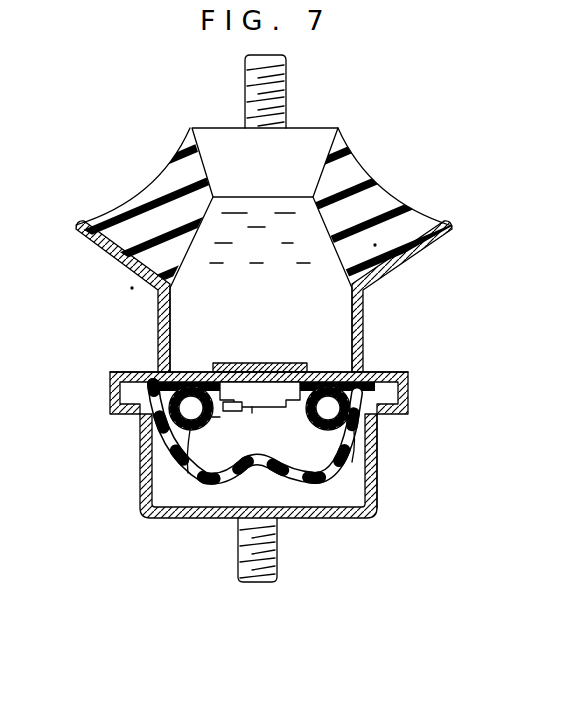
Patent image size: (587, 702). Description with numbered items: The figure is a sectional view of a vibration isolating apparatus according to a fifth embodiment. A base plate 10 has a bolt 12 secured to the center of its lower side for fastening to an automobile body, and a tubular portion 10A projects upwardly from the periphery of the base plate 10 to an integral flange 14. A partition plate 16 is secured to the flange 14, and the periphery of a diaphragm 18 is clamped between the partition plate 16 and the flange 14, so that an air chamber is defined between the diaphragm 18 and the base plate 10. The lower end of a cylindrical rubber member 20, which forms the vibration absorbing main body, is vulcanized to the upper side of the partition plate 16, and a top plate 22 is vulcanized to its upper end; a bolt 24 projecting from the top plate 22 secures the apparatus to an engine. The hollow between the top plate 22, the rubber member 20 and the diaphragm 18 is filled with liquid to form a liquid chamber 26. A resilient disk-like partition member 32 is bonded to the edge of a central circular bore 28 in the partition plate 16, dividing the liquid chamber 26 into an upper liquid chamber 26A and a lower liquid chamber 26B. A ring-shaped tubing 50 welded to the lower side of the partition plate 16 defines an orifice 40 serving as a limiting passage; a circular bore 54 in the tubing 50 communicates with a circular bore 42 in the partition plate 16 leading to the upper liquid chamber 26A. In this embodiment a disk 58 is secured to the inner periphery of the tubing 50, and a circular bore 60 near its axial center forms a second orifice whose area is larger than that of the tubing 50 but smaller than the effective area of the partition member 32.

The base plate 10 is at (317, 518).
The tubular portion 10A is at (378, 482).
The bolt 12 is at (278, 560).
The flange 14 is at (392, 416).
The partition plate 16 is at (378, 368).
The diaphragm 18 is at (347, 459).
The cylindrical rubber member 20 is at (385, 205).
The top plate 22 is at (303, 143).
The bolt 24 is at (287, 73).
The liquid chamber 26 is at (204, 318).
The upper liquid chamber 26A is at (295, 300).
The lower liquid chamber 26B is at (333, 458).
The circular bore 28 is at (286, 389).
The resilient partition member 32 is at (270, 363).
The orifice 40 is at (181, 474).
The circular bore 42 is at (193, 373).
The tubing 50 is at (302, 424).
The circular bore 54 is at (213, 420).
The disk 58 is at (251, 414).
The circular bore 60 is at (226, 420).